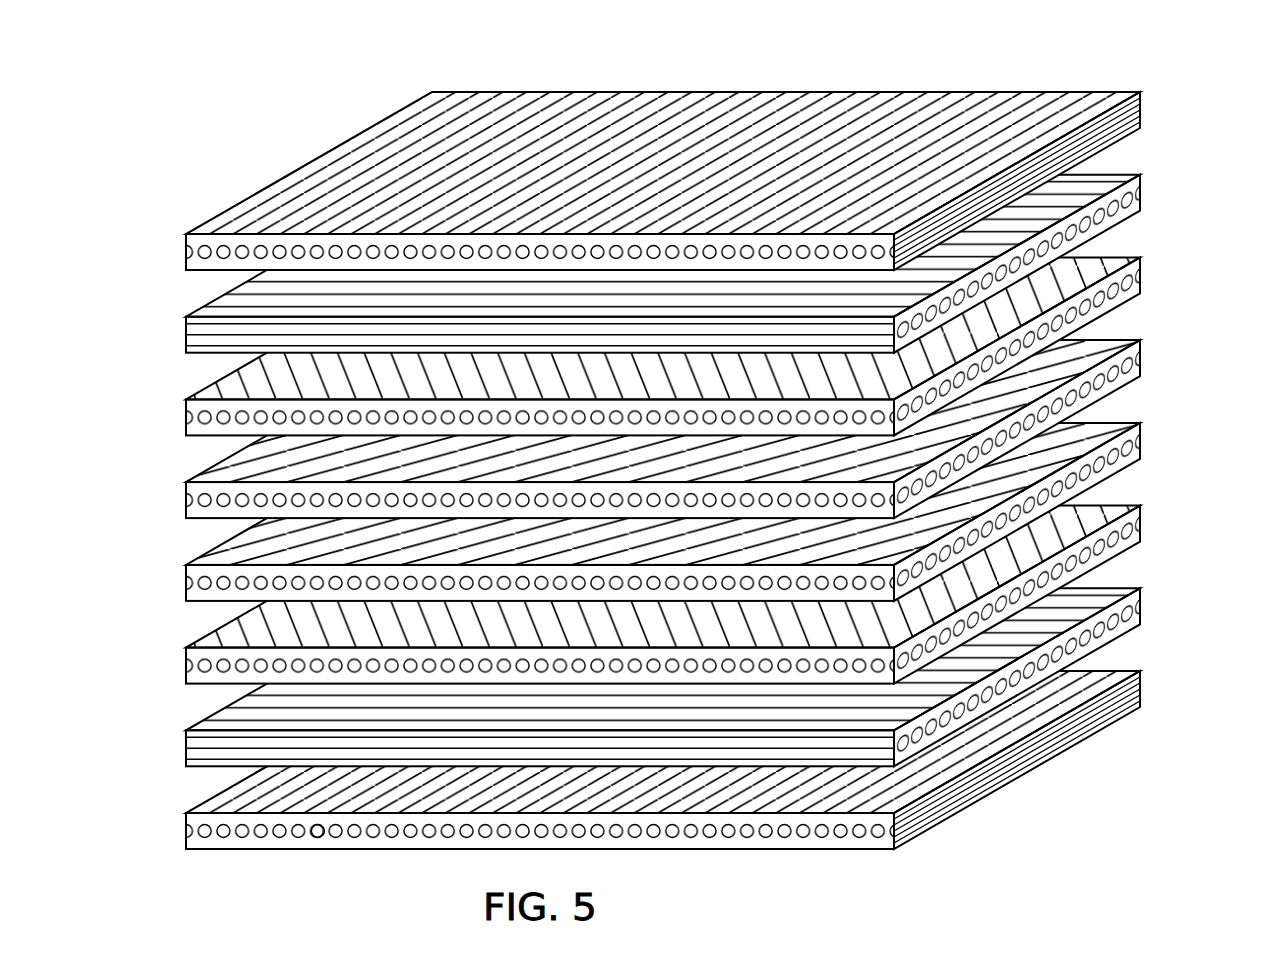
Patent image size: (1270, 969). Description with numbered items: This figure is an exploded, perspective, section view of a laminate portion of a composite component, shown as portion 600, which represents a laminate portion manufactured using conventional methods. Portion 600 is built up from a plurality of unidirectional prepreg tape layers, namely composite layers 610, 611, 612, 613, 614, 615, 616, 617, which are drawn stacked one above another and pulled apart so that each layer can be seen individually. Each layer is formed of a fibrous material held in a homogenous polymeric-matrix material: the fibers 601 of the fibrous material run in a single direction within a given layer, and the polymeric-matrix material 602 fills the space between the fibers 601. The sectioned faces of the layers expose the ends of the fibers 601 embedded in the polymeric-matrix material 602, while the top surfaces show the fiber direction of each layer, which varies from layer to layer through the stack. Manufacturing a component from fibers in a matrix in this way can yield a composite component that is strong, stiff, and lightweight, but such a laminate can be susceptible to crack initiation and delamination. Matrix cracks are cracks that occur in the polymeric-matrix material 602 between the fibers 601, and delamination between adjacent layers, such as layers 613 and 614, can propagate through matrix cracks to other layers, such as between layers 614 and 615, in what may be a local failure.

The portion 600 is at (702, 472).
The fibers 601 is at (316, 837).
The polymeric-matrix material 602 is at (415, 842).
The composite layer 610 is at (1141, 112).
The composite layer 611 is at (1141, 190).
The composite layer 612 is at (1141, 273).
The composite layer 613 is at (1141, 357).
The composite layer 614 is at (1141, 441).
The composite layer 615 is at (1141, 523).
The composite layer 616 is at (1141, 607).
The composite layer 617 is at (1141, 693).